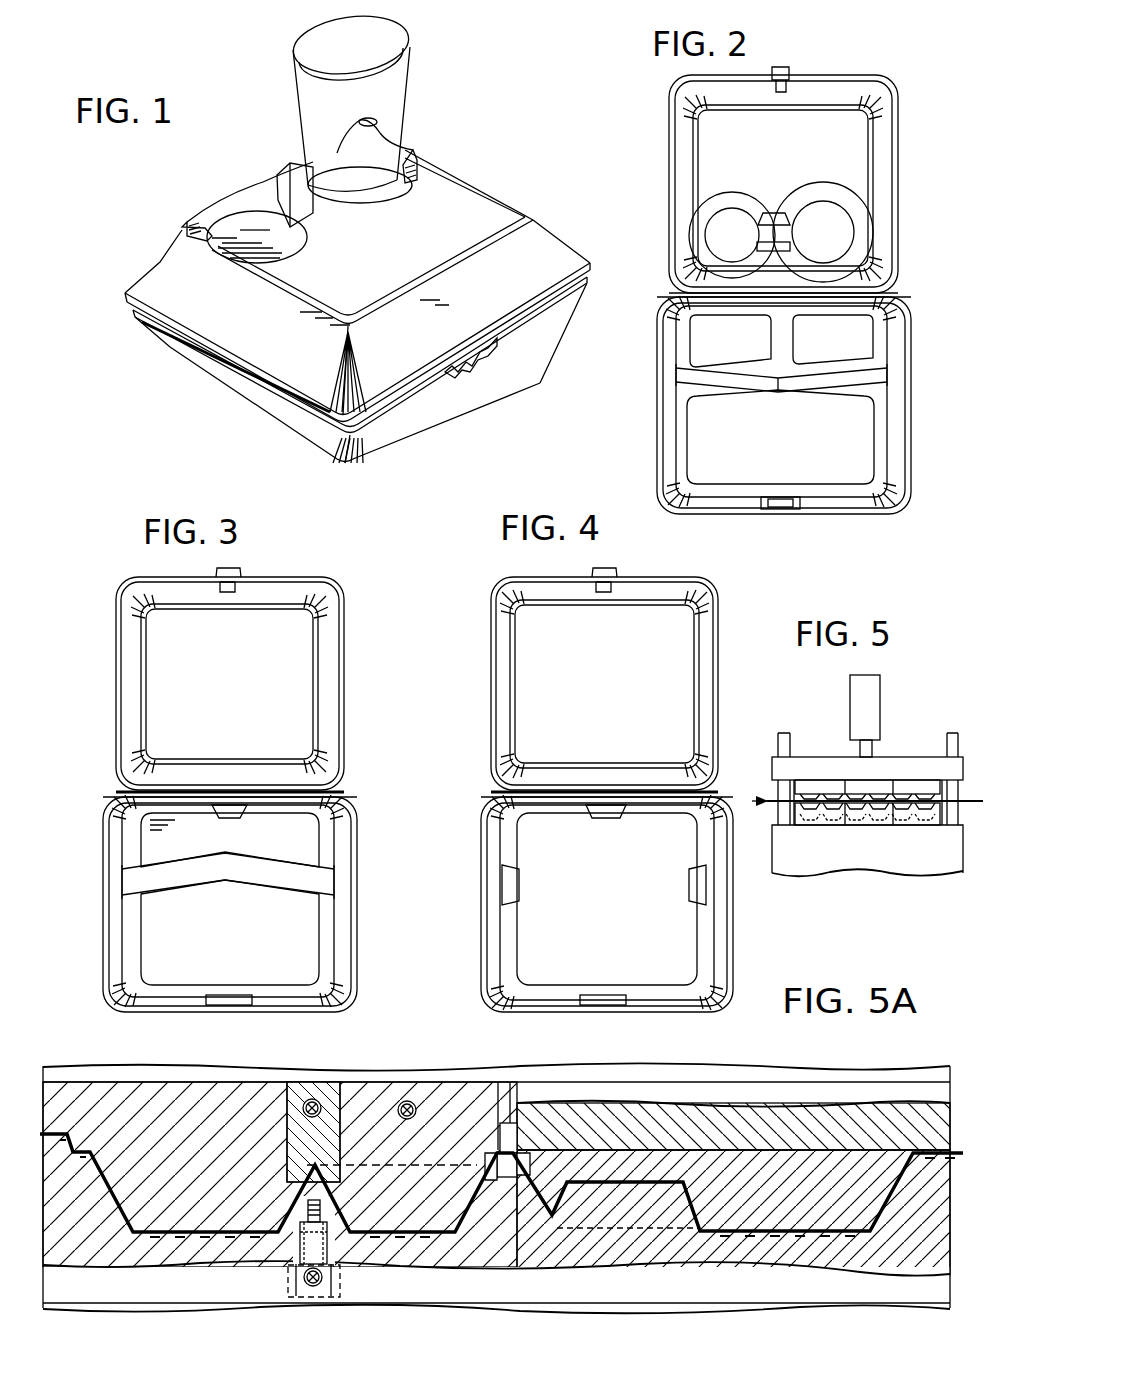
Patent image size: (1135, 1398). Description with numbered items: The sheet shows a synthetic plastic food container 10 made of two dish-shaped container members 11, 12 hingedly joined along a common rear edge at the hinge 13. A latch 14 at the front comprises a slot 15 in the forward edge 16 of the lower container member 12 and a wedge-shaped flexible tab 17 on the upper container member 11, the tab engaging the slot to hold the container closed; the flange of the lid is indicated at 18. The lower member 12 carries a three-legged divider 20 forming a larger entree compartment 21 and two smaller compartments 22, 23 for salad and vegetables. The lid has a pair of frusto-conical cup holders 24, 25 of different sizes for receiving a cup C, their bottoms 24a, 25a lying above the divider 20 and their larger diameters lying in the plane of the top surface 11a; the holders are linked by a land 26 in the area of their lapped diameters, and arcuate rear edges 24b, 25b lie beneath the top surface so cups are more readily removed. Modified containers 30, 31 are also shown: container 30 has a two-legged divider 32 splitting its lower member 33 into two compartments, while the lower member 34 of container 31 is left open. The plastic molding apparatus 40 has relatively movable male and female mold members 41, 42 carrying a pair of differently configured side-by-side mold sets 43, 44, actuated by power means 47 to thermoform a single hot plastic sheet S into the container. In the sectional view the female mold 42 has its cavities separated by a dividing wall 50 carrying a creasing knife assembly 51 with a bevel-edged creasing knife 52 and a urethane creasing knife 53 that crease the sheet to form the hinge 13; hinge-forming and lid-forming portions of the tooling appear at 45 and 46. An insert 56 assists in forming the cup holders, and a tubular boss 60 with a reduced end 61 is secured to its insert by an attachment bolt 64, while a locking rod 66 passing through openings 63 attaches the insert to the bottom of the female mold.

In FIG. 1, the food container 10 is at (360, 237).
In FIG. 2, the food container 10 is at (737, 291).
In FIG. 5, the food container 10 is at (964, 797).
In FIG. 5A, the food container 10 is at (108, 1177).
In FIG. 1, the container member 11 is at (357, 215).
In FIG. 2, the container member 11 is at (783, 156).
In FIG. 5A, the container member 11 is at (855, 1170).
In FIG. 1, the top surface 11a is at (432, 242).
In FIG. 2, the top surface 11a is at (797, 145).
In FIG. 1, the container member 12 is at (364, 371).
In FIG. 2, the container member 12 is at (737, 430).
In FIG. 5A, the container member 12 is at (222, 1223).
In FIG. 2, the hinge 13 is at (693, 290).
In FIG. 5A, the hinge 13 is at (492, 1130).
In FIG. 1, the latch 14 is at (475, 362).
In FIG. 2, the slot 15 is at (775, 510).
In FIG. 2, the forward edge 16 is at (835, 514).
In FIG. 2, the flexible tab 17 is at (782, 67).
In FIG. 1, the lid flange 18 is at (357, 342).
In FIG. 2, the lid flange 18 is at (835, 75).
In FIG. 2, the three-legged divider 20 is at (755, 380).
In FIG. 2, the food compartment 21 is at (791, 462).
In FIG. 2, the food compartment 22 is at (732, 350).
In FIG. 2, the food compartment 23 is at (845, 350).
In FIG. 1, the cup holder 24 is at (262, 225).
In FIG. 2, the cup holder 24 is at (732, 215).
In FIG. 1, the bottom 24a is at (250, 228).
In FIG. 1, the arcuate rear edge 24b is at (225, 207).
In FIG. 1, the cup holder 25 is at (373, 180).
In FIG. 2, the cup holder 25 is at (832, 212).
In FIG. 1, the bottom 25a is at (410, 165).
In FIG. 1, the arcuate rear edge 25b is at (308, 185).
In FIG. 1, the land 26 is at (307, 227).
In FIG. 2, the land 26 is at (773, 233).
In FIG. 3, the food container 30 is at (207, 803).
In FIG. 4, the food container 31 is at (522, 595).
In FIG. 3, the two-legged divider 32 is at (190, 885).
In FIG. 3, the container member 33 is at (165, 960).
In FIG. 4, the container member 34 is at (535, 965).
In FIG. 5, the plastic molding apparatus 40 is at (865, 848).
In FIG. 5, the male mold member 41 is at (800, 825).
In FIG. 5A, the male mold member 41 is at (748, 1095).
In FIG. 5, the female mold member 42 is at (828, 780).
In FIG. 5A, the female mold member 42 is at (227, 1280).
In FIG. 5A, the mold set 43 is at (430, 1250).
In FIG. 5A, the mold set 44 is at (757, 1250).
In FIG. 5A, the hinge forming insert 45 is at (367, 1110).
In FIG. 5A, the lid mold block 46 is at (808, 1120).
In FIG. 5, the power means 47 is at (868, 685).
In FIG. 5A, the dividing wall 50 is at (530, 1220).
In FIG. 5A, the creasing knife assembly 51 is at (493, 1182).
In FIG. 5A, the bevel edged creasing knife 52 is at (513, 1177).
In FIG. 5A, the urethane creasing knife 53 is at (505, 1120).
In FIG. 5A, the insert 56 is at (650, 1217).
In FIG. 5A, the boss 60 is at (340, 1288).
In FIG. 5A, the reduced end 61 is at (297, 1247).
In FIG. 5A, the openings 63 is at (327, 1277).
In FIG. 5A, the attachment bolt 64 is at (320, 1212).
In FIG. 5A, the locking rod 66 is at (315, 1286).
In FIG. 1, the cup C is at (398, 22).
In FIG. 5A, the sheet of synthetic plastic material S is at (507, 1127).